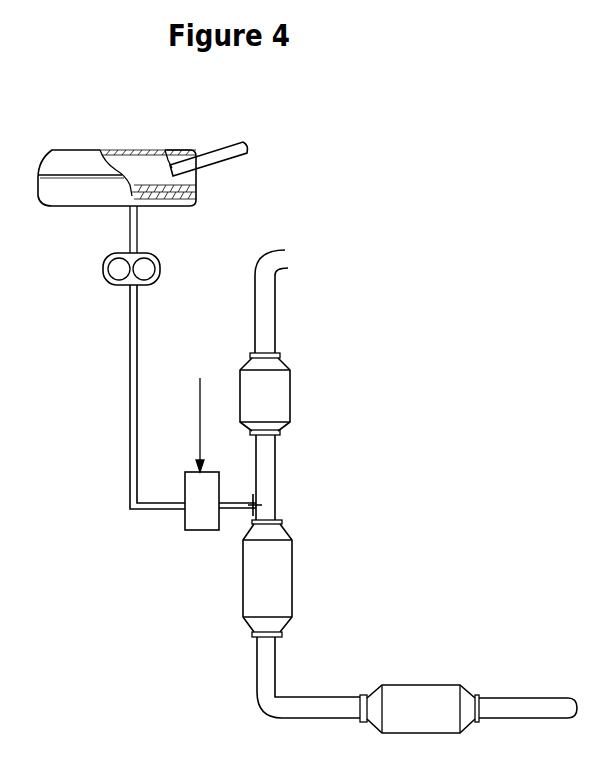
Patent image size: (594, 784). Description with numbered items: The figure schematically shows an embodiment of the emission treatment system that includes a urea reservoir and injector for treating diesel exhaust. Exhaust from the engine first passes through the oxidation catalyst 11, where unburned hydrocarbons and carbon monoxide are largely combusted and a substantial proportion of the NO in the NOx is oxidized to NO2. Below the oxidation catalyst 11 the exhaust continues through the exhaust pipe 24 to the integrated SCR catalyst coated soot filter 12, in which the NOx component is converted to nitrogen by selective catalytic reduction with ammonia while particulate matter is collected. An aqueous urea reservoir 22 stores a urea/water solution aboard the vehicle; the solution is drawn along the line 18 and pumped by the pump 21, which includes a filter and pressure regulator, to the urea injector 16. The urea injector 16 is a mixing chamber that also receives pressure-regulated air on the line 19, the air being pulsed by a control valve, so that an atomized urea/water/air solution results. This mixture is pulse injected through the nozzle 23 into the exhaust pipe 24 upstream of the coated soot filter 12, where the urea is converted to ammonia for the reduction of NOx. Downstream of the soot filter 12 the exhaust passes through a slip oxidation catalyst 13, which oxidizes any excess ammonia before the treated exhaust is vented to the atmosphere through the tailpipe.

The oxidation catalyst 11 is at (290, 386).
The soot filter 12 is at (292, 570).
The slip oxidation catalyst 13 is at (424, 686).
The urea injector 16 is at (184, 517).
The line 18 is at (128, 457).
The line 19 is at (198, 394).
The pump 21 is at (158, 256).
The aqueous urea reservoir 22 is at (133, 148).
The nozzle 23 is at (251, 494).
The exhaust pipe 24 is at (276, 487).